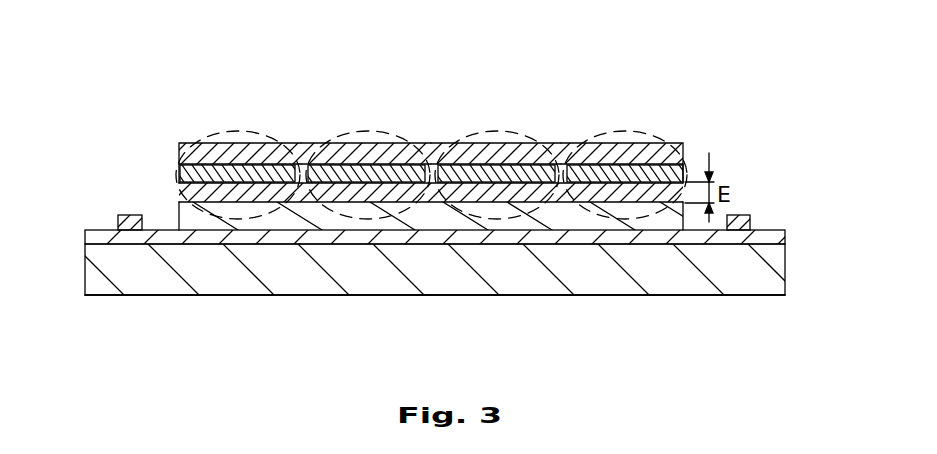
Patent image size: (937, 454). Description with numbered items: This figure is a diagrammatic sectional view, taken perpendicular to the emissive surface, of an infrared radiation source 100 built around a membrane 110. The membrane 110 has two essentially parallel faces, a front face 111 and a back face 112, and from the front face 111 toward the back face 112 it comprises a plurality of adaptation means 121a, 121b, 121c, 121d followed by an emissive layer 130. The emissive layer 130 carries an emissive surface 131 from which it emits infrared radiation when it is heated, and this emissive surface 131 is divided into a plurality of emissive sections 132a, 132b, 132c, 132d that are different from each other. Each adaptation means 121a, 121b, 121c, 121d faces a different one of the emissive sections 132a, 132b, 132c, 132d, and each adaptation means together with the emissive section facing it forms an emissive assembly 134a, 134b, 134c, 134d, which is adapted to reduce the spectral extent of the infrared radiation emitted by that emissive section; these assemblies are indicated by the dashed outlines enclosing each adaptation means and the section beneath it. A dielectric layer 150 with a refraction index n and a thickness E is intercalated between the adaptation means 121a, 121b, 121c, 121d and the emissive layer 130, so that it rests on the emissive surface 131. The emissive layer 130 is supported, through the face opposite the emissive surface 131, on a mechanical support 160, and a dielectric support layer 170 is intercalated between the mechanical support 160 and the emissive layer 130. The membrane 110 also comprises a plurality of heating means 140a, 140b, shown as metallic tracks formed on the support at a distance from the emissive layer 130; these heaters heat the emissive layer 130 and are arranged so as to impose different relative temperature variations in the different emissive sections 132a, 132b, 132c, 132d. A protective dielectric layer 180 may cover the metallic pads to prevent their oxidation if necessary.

The source 100 is at (150, 107).
The membrane 110 is at (85, 258).
The front face 111 is at (445, 100).
The back face 112 is at (167, 312).
The adaptation means 121a is at (228, 152).
The adaptation means 121b is at (383, 152).
The adaptation means 121c is at (493, 152).
The adaptation means 121d is at (630, 152).
The emissive layer 130 is at (178, 215).
The emissive surface 131 is at (300, 172).
The emissive section 132a is at (237, 205).
The emissive section 132b is at (373, 205).
The emissive section 132c is at (497, 203).
The emissive section 132d is at (630, 203).
The emissive assembly 134a is at (260, 136).
The emissive assembly 134b is at (333, 138).
The emissive assembly 134c is at (480, 133).
The emissive assembly 134d is at (658, 139).
The heating means 140a is at (118, 222).
The heating means 140b is at (742, 215).
The dielectric layer 150 is at (180, 178).
The mechanical support 160 is at (103, 285).
The dielectric support layer 170 is at (785, 237).
The protective dielectric layer 180 is at (562, 172).